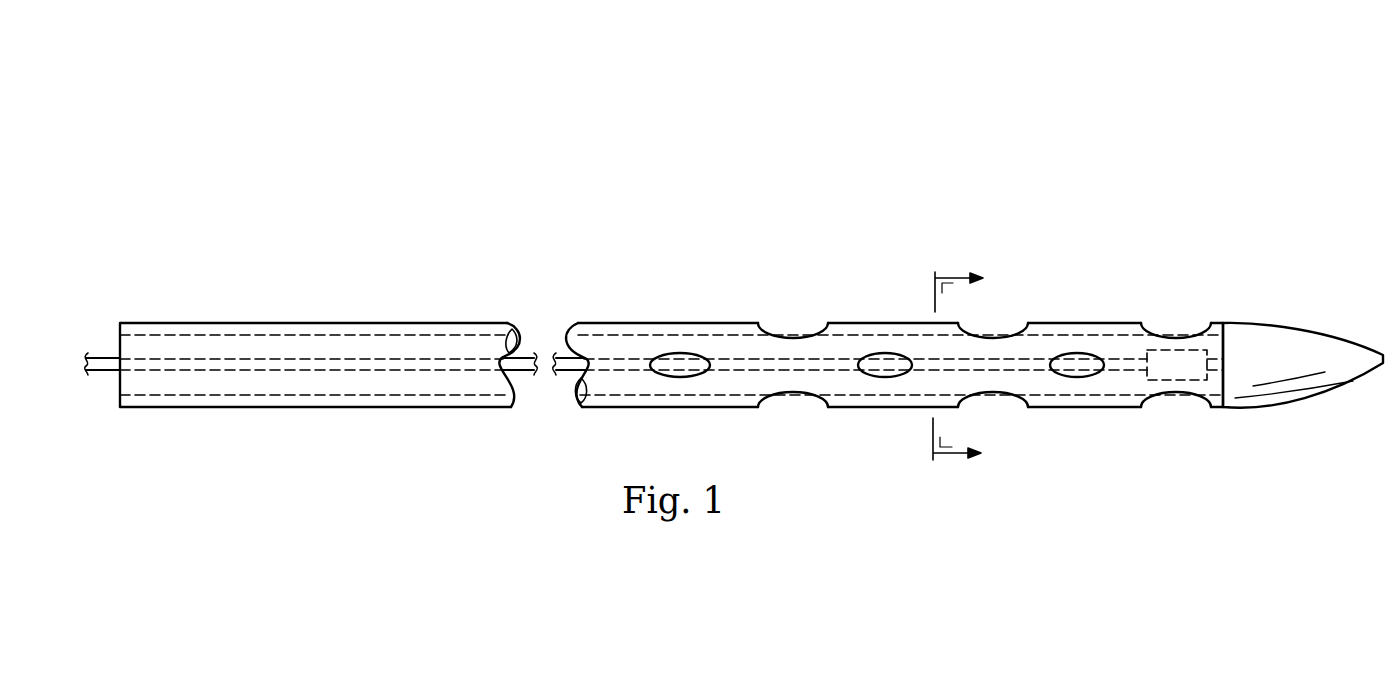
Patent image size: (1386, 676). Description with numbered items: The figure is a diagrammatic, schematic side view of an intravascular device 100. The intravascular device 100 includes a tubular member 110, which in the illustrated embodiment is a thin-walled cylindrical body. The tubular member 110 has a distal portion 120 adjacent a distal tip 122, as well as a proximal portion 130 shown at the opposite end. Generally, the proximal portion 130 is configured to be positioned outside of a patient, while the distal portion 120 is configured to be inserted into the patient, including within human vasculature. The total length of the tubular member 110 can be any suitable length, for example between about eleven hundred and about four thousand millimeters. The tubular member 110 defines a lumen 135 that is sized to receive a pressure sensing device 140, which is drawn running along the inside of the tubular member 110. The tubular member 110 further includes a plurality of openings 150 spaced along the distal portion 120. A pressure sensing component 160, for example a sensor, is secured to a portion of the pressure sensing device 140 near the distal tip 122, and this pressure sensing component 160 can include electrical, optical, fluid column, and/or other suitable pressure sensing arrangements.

The intravascular device 100 is at (445, 177).
The tubular member 110 is at (440, 322).
The distal portion 120 is at (1085, 322).
The distal tip 122 is at (1270, 328).
The proximal portion 130 is at (238, 322).
The lumen 135 is at (218, 395).
The pressure sensing device 140 is at (378, 372).
The openings 150 is at (812, 433).
The pressure sensing component 160 is at (1175, 381).